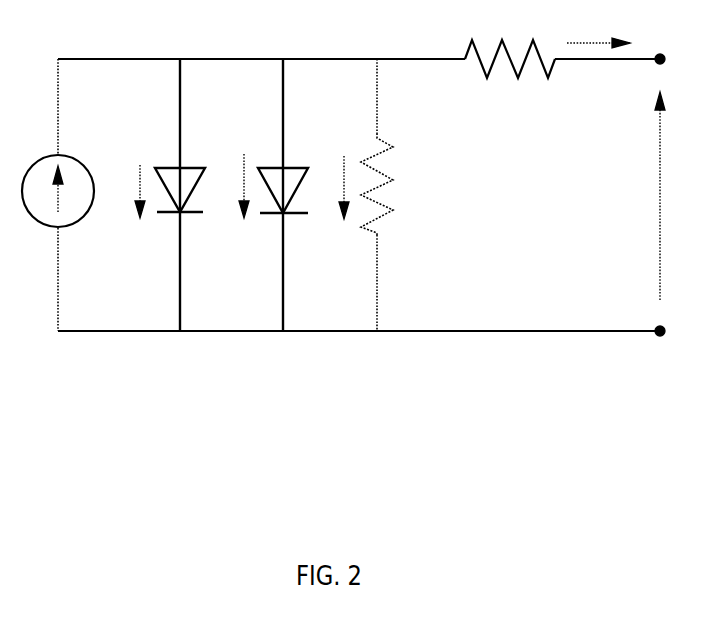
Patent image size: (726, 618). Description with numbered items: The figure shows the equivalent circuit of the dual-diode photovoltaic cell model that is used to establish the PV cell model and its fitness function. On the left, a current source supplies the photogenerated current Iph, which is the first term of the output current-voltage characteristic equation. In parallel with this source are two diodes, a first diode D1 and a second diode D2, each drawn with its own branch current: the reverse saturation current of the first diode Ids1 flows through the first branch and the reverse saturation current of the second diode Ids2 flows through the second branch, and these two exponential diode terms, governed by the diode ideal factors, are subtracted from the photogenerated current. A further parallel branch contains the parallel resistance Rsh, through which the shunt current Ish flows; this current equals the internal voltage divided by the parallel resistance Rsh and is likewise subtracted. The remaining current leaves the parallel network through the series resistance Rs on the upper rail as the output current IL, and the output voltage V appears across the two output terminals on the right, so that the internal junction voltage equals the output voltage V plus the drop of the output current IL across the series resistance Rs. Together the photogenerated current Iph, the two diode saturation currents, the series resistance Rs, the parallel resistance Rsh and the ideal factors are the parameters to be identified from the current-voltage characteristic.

The photogenerated current Iph is at (57, 203).
The first diode D1 is at (183, 195).
The second diode D2 is at (287, 195).
The reverse saturation current of the first diode Ids1 is at (144, 177).
The reverse saturation current of the second diode Ids2 is at (249, 177).
The parallel resistance Rsh is at (399, 195).
The current through the parallel resistance Ish is at (345, 178).
The series resistance Rs is at (510, 76).
The output current IL is at (598, 31).
The output voltage V is at (672, 196).